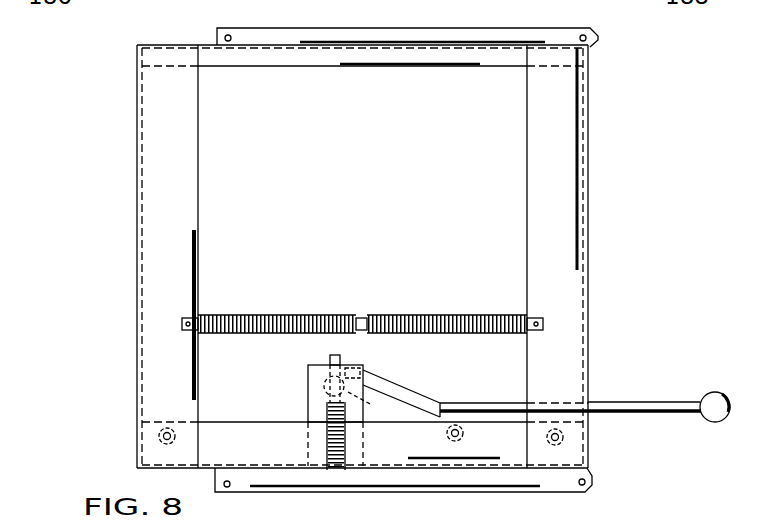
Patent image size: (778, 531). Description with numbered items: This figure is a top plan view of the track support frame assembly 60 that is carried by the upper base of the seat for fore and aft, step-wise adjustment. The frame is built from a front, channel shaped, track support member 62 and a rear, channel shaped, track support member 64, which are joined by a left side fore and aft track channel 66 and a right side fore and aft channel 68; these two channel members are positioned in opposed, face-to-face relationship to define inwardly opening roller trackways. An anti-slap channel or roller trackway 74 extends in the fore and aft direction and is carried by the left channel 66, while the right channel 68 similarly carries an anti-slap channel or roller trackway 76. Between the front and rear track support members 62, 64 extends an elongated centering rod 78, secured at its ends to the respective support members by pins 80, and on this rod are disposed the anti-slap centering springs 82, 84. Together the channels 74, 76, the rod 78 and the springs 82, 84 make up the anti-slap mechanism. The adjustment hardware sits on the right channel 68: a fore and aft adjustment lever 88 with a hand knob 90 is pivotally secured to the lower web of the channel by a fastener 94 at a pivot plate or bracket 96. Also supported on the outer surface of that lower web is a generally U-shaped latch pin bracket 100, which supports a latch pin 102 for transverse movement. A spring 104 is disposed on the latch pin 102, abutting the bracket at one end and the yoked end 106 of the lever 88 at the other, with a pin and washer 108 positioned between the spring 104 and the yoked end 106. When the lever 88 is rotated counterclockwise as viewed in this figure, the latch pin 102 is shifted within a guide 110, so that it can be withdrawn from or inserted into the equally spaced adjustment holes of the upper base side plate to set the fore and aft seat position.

The track support frame assembly 60 is at (98, 113).
The front track support member 62 is at (567, 276).
The rear track support member 64 is at (148, 212).
The left side fore and aft track channel 66 is at (213, 55).
The right side fore and aft channel 68 is at (212, 432).
The anti-slap channel 74 is at (459, 28).
The anti-slap channel 76 is at (430, 483).
The elongated rod 78 is at (364, 313).
The pins 80 is at (183, 323).
The anti-slap centering spring 82 is at (463, 313).
The anti-slap centering spring 84 is at (256, 313).
The fore and aft adjustment lever 88 is at (645, 400).
The hand knob 90 is at (720, 394).
The fastener 94 is at (462, 425).
The pivot plate or bracket 96 is at (435, 380).
The latch pin bracket 100 is at (308, 395).
The latch pin 102 is at (352, 365).
The spring 104 is at (328, 436).
The yoked end 106 is at (328, 367).
The pin and washer 108 is at (352, 395).
The guide 110 is at (390, 375).